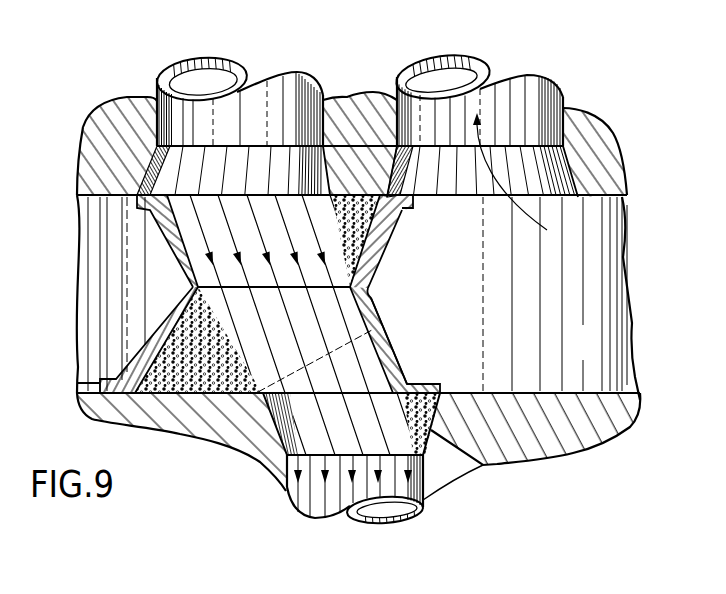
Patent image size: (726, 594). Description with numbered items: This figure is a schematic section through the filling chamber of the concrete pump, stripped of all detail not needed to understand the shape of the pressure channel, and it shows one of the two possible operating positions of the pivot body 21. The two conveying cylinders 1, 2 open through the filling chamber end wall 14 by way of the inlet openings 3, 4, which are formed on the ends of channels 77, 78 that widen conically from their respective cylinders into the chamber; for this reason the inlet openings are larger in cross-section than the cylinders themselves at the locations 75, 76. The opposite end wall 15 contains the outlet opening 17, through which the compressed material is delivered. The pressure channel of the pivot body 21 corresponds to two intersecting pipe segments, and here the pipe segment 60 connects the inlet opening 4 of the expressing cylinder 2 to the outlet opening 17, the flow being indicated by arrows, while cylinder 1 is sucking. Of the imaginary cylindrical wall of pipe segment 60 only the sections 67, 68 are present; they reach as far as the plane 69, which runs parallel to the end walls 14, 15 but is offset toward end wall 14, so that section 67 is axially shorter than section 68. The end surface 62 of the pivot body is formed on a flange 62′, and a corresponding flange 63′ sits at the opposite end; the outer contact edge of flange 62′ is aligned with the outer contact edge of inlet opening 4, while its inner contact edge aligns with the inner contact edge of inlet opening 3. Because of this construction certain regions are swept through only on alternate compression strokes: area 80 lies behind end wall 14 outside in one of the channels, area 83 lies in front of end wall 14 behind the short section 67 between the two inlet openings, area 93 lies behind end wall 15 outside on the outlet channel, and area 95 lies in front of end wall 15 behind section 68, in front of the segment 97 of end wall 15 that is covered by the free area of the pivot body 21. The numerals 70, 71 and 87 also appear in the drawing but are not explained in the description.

The conveying cylinder 1 is at (497, 84).
The conveying cylinder 2 is at (160, 80).
The inlet opening 3 is at (581, 200).
The inlet opening 4 is at (334, 193).
The filling chamber end wall 14 is at (623, 203).
The filling chamber end wall 15 is at (586, 391).
The outlet opening 17 is at (283, 400).
The pivot body 21 is at (411, 339).
The pipe segment 60 is at (197, 240).
The end surface 62 is at (392, 193).
The flange 62′ is at (412, 212).
The flange 63′ is at (76, 378).
The cylindrical wall section 67 is at (148, 240).
The cylindrical wall section 68 is at (403, 350).
The plane 69 is at (288, 290).
The left body portion 70 is at (145, 215).
The tube wall 71 is at (394, 192).
The cylinder cross-section location 75 is at (296, 80).
The cylinder cross-section location 76 is at (541, 78).
The channel 77 is at (574, 180).
The channel 78 is at (157, 150).
The alternately swept area 80 is at (157, 150).
The alternately swept area 83 is at (370, 235).
The lower left plate 87 is at (108, 400).
The alternately swept area 93 is at (481, 458).
The alternately swept area 95 is at (180, 395).
The end wall segment 97 is at (238, 408).